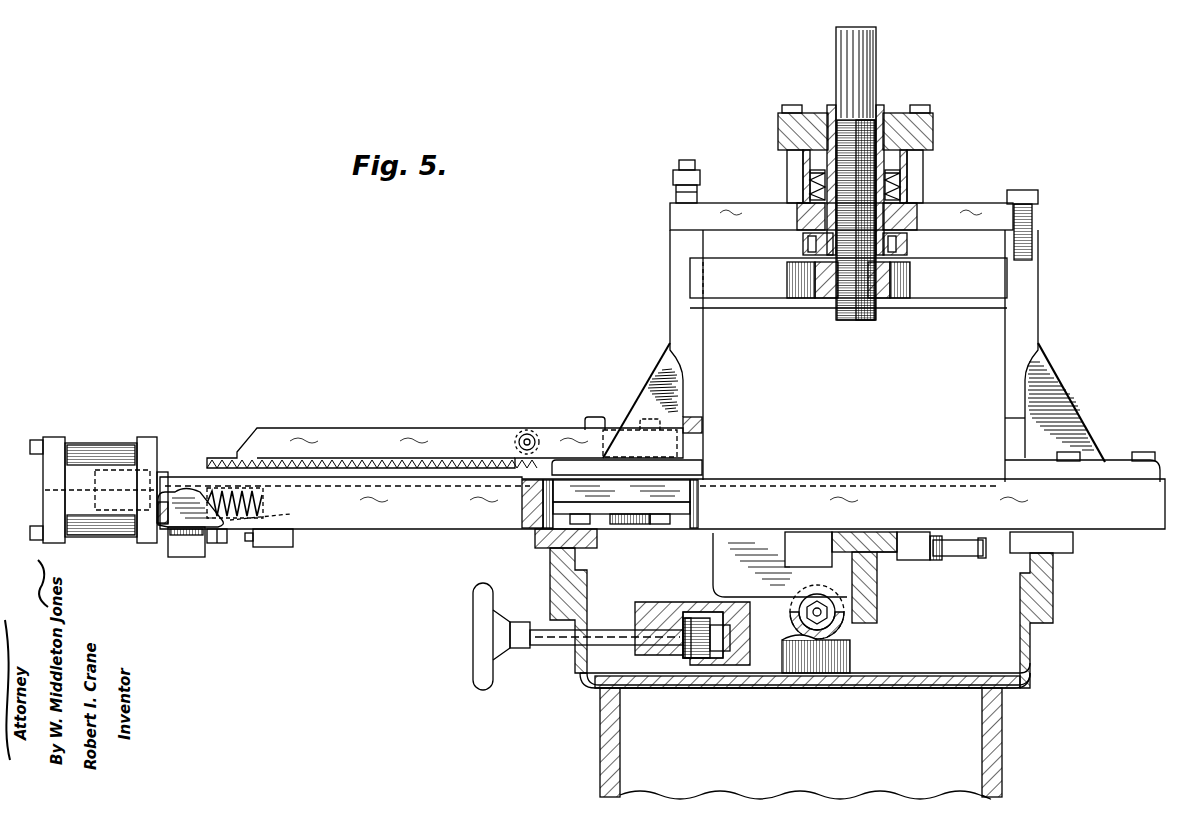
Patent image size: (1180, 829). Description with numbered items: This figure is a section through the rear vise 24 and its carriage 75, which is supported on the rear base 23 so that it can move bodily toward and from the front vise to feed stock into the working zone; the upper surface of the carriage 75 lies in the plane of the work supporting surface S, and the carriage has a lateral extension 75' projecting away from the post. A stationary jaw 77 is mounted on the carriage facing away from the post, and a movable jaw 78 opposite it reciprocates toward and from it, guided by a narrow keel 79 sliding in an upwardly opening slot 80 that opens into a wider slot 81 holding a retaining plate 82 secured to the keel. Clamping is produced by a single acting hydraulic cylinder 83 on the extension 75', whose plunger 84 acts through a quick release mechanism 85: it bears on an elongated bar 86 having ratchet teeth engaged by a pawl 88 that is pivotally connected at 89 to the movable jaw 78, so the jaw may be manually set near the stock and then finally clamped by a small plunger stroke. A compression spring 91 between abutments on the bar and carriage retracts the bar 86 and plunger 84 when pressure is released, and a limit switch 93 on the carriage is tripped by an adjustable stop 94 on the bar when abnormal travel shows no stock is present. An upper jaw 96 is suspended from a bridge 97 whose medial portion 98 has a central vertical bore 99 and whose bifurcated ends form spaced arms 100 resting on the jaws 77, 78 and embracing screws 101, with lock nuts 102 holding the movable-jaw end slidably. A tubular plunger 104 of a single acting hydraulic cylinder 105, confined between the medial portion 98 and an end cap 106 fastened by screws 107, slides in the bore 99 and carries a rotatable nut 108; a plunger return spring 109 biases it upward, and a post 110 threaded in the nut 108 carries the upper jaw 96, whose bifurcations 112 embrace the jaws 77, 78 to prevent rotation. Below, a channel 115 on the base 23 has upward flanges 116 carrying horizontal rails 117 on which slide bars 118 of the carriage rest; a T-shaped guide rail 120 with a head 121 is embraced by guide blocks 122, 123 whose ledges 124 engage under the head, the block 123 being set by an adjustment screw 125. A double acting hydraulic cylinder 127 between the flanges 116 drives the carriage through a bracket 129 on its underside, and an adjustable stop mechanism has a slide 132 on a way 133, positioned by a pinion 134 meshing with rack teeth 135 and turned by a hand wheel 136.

The rear base 23 is at (582, 744).
The rear vise 24 is at (604, 312).
The carriage 75 is at (662, 488).
The carriage lateral extension 75' is at (350, 542).
The stationary jaw 77 is at (1032, 330).
The movable jaw 78 is at (675, 320).
The keel 79 is at (640, 500).
The upwardly opening slot 80 is at (726, 484).
The wider slot 81 is at (700, 520).
The retaining plate 82 is at (602, 515).
The single acting hydraulic cylinder 83 is at (92, 465).
The plunger 84 is at (165, 472).
The quick release mechanism 85 is at (263, 412).
The elongated bar 86 is at (190, 476).
The pawl 88 is at (312, 432).
The pivotal connection 89 is at (528, 432).
The compression spring 91 is at (258, 506).
The limit switch 93 is at (272, 547).
The adjustable stop 94 is at (218, 548).
The upper jaw 96 is at (925, 295).
The bridge 97 is at (950, 215).
The medial portion 98 is at (912, 215).
The central vertical bore 99 is at (908, 232).
The spaced arms 100 is at (732, 208).
The screws 101 is at (686, 165).
The lock nuts 102 is at (673, 190).
The plunger 104 is at (826, 112).
The single acting hydraulic cylinder 105 is at (952, 130).
The end cap 106 is at (890, 112).
The screws 107 is at (794, 163).
The nut 108 is at (803, 246).
The plunger return spring 109 is at (812, 184).
The post 110 is at (840, 75).
The bifurcations 112 is at (738, 290).
The channel 115 is at (1030, 660).
The flanges 116 is at (585, 596).
The horizontal rail 117 is at (553, 577).
The slide bars 118 is at (537, 540).
The guide rail 120 is at (877, 598).
The head 121 is at (872, 532).
The guide block 122 is at (815, 540).
The adjustable guide block 123 is at (910, 545).
The ledges 124 is at (878, 560).
The adjustment screw 125 is at (948, 560).
The double acting hydraulic cylinder 127 is at (848, 622).
The bracket 129 is at (752, 552).
The slide 132 is at (693, 608).
The way 133 is at (705, 658).
The pinion 134 is at (690, 660).
The rack teeth 135 is at (735, 660).
The hand wheel 136 is at (478, 638).
The work supporting surface S is at (895, 486).